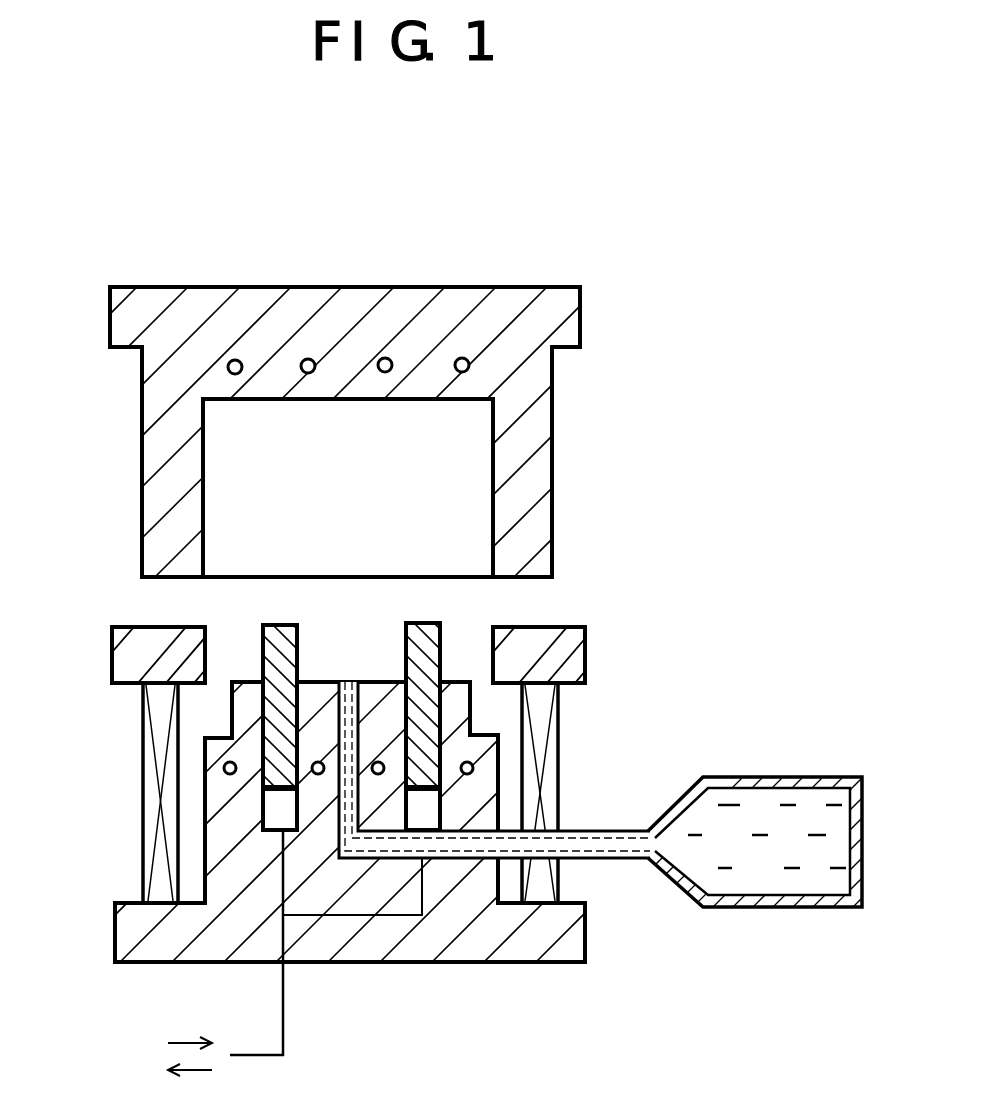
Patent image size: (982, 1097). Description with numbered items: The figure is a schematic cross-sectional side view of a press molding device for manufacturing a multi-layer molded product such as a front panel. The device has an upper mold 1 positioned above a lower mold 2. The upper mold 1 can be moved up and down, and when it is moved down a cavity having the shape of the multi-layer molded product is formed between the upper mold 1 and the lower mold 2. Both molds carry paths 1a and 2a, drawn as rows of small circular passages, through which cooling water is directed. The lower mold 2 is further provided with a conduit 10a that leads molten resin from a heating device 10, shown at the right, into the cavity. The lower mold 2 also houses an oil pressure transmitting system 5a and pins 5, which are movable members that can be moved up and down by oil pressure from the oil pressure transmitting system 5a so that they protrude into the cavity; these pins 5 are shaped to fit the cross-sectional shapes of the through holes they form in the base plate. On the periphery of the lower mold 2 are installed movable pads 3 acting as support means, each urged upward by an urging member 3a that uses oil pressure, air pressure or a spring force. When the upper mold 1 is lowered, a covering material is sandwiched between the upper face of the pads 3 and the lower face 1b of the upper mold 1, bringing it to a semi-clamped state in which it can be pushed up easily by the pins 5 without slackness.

The upper mold 1 is at (502, 305).
The path 1a is at (306, 356).
The lower face of the upper mold 1b is at (147, 579).
The lower mold 2 is at (432, 935).
The path 2a is at (223, 764).
The movable pad 3 is at (125, 655).
The urging member 3a is at (150, 797).
The pin 5 is at (282, 633).
The oil pressure transmitting system 5a is at (283, 1005).
The heating device 10 is at (755, 778).
The conduit 10a is at (340, 826).